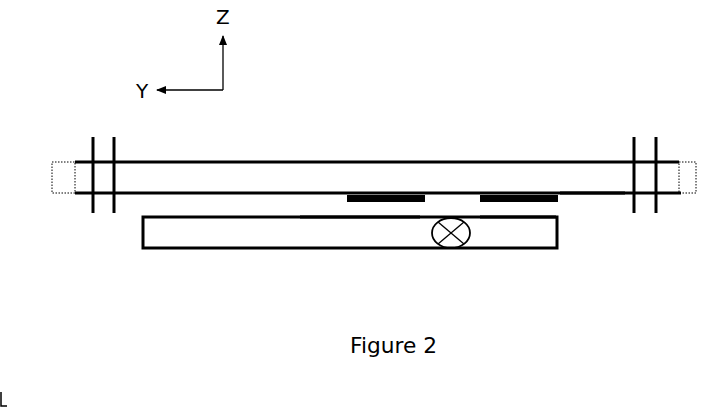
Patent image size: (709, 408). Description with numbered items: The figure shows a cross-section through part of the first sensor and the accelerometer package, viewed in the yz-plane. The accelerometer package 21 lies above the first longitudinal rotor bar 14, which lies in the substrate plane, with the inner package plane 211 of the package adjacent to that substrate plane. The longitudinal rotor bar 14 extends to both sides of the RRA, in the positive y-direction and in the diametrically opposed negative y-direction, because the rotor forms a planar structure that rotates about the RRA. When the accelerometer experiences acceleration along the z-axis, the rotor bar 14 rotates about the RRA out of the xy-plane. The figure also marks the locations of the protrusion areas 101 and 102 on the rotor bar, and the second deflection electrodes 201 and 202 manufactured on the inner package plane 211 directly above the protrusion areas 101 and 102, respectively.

The accelerometer package 21 is at (298, 190).
The second deflection electrode 201 is at (382, 194).
The second deflection electrode 202 is at (517, 193).
The inner package plane 211 is at (576, 199).
The first longitudinal rotor bar 14 is at (236, 236).
The protrusion area 101 is at (380, 219).
The protrusion area 102 is at (519, 220).
The rotation axis RRA is at (454, 234).